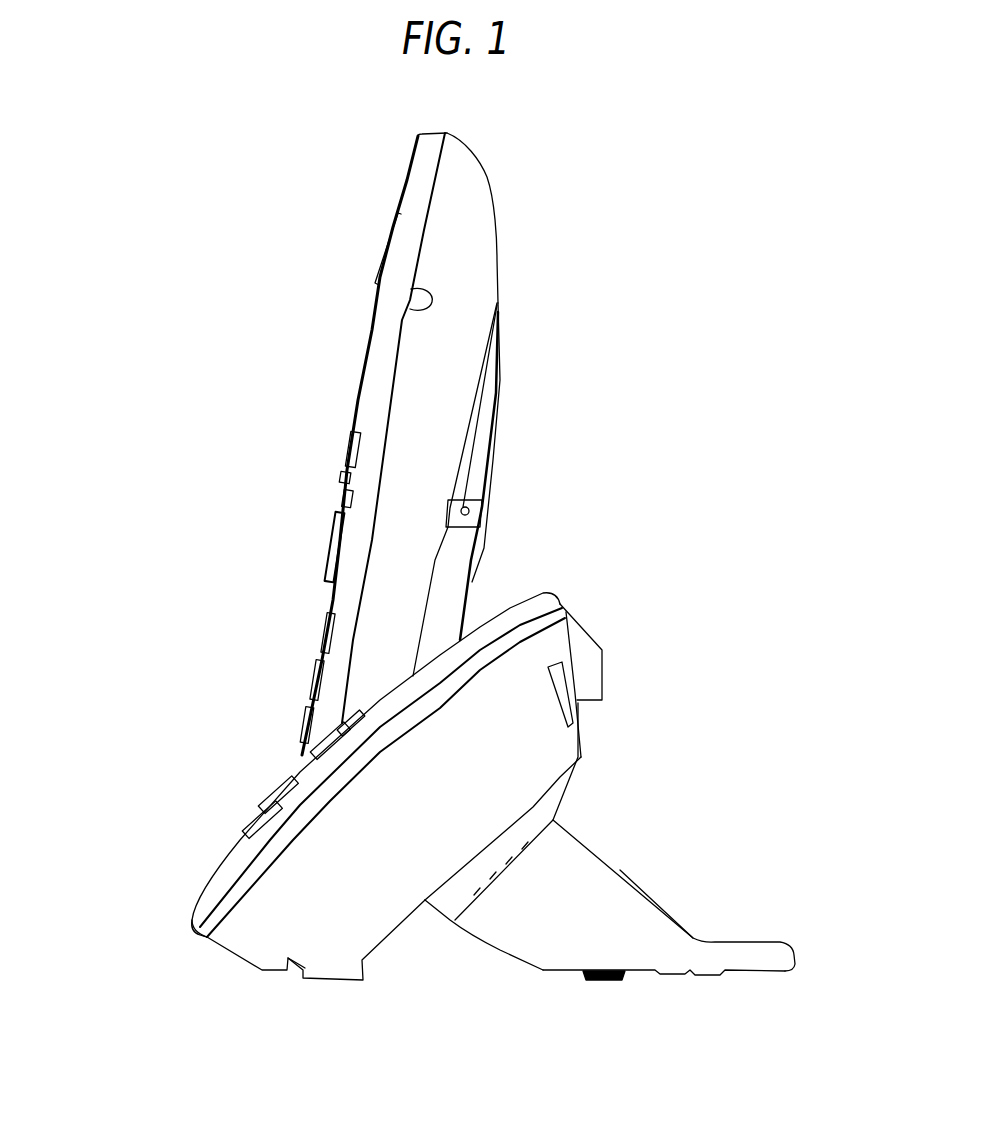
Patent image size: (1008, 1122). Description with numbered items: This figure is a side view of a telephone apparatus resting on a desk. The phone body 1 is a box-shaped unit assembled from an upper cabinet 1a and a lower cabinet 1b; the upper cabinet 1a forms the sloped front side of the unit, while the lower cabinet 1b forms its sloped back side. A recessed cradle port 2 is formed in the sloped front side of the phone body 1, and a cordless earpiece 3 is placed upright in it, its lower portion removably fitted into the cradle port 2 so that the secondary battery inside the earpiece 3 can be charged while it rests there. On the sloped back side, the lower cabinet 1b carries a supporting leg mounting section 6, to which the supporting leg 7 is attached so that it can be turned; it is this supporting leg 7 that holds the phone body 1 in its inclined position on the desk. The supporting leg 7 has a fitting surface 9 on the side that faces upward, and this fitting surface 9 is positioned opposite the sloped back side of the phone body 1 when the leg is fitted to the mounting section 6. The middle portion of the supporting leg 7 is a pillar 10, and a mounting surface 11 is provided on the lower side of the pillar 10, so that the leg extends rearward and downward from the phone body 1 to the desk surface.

The phone body 1 is at (458, 773).
The upper cabinet 1a is at (196, 930).
The lower cabinet 1b is at (243, 943).
The cradle port 2 is at (460, 613).
The cordless earpiece 3 is at (463, 280).
The supporting leg mounting section 6 is at (540, 822).
The supporting leg 7 is at (593, 875).
The fitting surface 9 is at (470, 898).
The pillar 10 is at (630, 907).
The mounting surface 11 is at (563, 962).